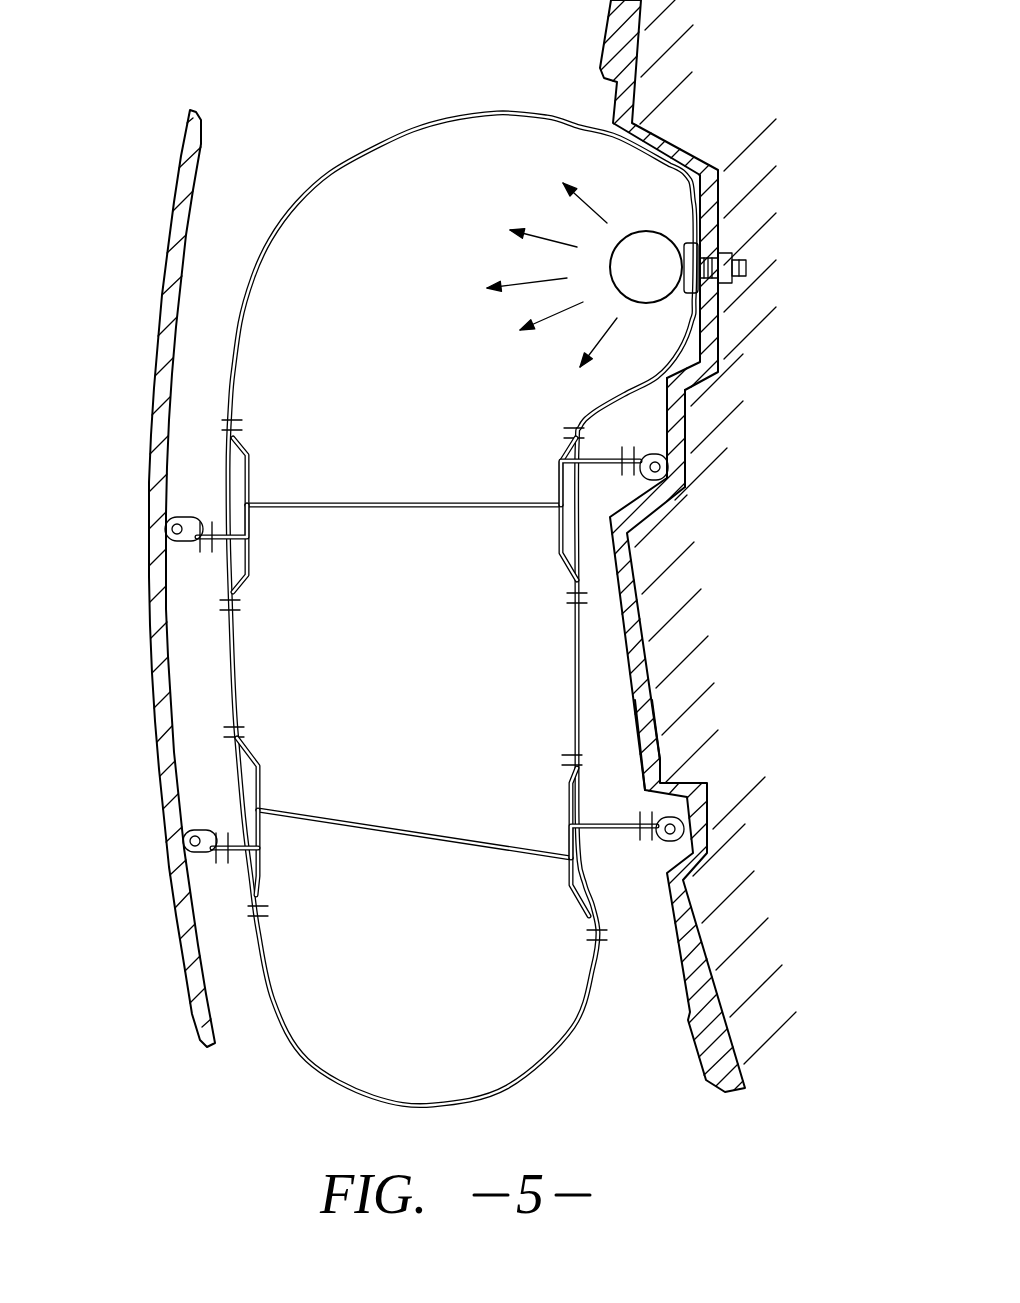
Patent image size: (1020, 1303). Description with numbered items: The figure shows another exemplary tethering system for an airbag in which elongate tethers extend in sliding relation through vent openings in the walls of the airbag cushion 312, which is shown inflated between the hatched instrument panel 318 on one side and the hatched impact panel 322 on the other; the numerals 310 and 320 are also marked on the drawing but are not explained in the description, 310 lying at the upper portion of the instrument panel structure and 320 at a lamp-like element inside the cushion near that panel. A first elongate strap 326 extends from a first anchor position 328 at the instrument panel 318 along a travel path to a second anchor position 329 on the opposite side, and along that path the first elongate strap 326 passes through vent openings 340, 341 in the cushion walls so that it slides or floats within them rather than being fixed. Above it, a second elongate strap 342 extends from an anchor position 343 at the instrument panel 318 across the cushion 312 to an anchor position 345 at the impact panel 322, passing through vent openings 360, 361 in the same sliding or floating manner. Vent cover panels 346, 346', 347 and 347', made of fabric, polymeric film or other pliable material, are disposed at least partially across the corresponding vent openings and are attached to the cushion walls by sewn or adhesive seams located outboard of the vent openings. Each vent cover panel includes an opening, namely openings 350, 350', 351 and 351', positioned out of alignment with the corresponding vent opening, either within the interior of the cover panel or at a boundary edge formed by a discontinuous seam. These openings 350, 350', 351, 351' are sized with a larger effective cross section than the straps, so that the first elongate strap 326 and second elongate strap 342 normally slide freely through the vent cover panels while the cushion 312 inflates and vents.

The instrument panel 310 is at (693, 147).
The cushion 312 is at (428, 124).
The instrument panel 318 is at (688, 970).
The lamp 320 is at (700, 328).
The impact panel 322 is at (175, 953).
The first elongate strap 326 is at (340, 820).
The first anchor position 328 is at (660, 815).
The second anchor position 329 is at (187, 833).
The vent opening 340 is at (590, 765).
The vent opening 341 is at (245, 872).
The second elongate strap 342 is at (327, 498).
The anchor position 343 is at (650, 493).
The anchor position 345 is at (170, 517).
The vent cover panel 346 is at (537, 806).
The vent cover panel 346' is at (303, 862).
The vent cover panel 347 is at (535, 464).
The vent cover panel 347' is at (278, 548).
The opening 350 is at (548, 895).
The opening 350' is at (286, 772).
The opening 351 is at (537, 542).
The opening 351' is at (278, 468).
The vent opening 360 is at (590, 428).
The vent opening 361 is at (232, 555).